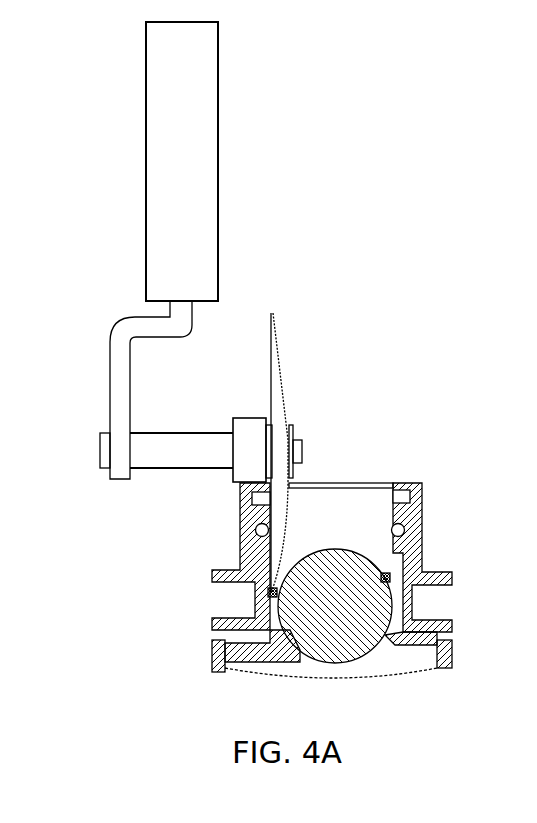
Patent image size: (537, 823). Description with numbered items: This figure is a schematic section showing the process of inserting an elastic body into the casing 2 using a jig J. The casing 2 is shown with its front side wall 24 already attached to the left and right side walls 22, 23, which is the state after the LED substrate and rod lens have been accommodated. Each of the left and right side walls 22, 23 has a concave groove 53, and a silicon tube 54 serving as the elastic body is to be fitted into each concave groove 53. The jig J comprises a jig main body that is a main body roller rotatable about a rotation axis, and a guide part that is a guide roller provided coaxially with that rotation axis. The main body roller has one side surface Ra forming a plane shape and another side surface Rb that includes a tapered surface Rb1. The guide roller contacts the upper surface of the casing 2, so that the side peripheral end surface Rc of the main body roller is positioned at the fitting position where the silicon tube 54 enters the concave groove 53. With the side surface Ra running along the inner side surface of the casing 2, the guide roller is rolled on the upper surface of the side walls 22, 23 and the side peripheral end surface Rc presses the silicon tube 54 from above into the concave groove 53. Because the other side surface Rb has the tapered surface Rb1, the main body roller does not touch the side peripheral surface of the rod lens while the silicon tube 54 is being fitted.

The jig J is at (240, 218).
The other side surface Rb is at (289, 393).
The tapered surface Rb1 is at (291, 552).
The casing 2 is at (328, 560).
The front side wall 24 is at (363, 483).
The one side surface Ra is at (244, 512).
The concave groove 53 is at (265, 594).
The silicon tube 54 is at (250, 577).
The right side wall 23 is at (212, 645).
The left side wall 22 is at (452, 648).
The side peripheral end surface Rc is at (291, 648).